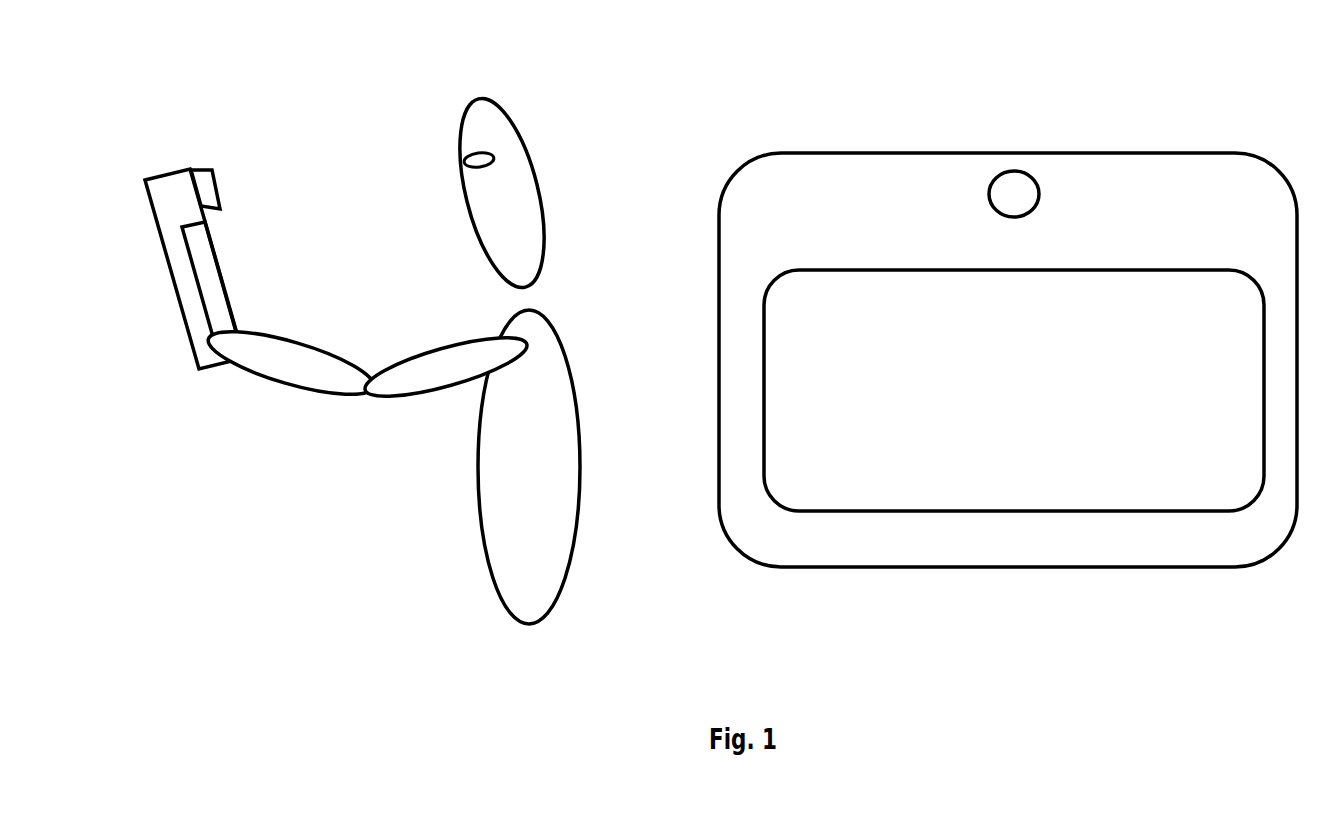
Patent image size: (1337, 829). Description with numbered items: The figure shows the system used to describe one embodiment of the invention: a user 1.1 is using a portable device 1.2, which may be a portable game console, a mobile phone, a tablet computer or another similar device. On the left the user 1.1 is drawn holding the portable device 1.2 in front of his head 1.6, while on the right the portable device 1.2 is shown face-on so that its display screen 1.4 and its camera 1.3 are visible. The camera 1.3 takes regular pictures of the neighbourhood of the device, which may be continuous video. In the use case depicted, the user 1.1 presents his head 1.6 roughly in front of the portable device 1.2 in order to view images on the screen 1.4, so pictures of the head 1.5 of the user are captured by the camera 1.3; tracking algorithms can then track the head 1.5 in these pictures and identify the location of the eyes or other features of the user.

The user 1.1 is at (563, 347).
The portable device 1.2 is at (166, 171).
The camera 1.3 is at (201, 167).
The display screen 1.4 is at (217, 260).
The head of the user 1.5 is at (1073, 477).
The head 1.6 is at (507, 115).